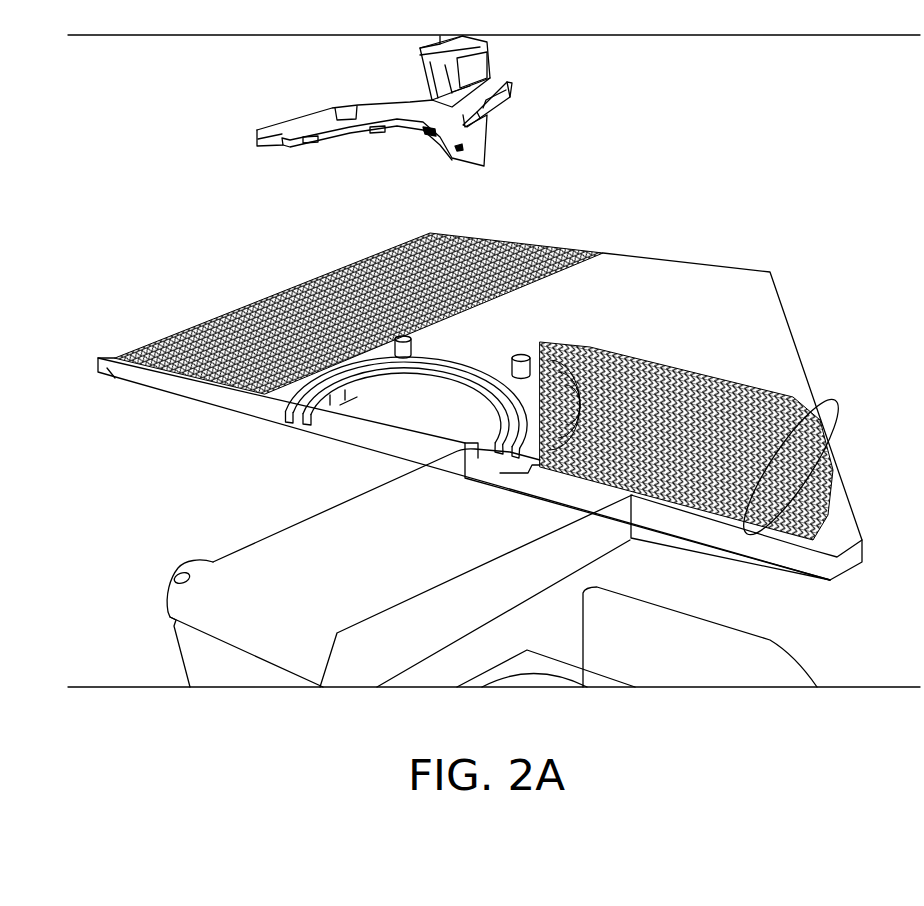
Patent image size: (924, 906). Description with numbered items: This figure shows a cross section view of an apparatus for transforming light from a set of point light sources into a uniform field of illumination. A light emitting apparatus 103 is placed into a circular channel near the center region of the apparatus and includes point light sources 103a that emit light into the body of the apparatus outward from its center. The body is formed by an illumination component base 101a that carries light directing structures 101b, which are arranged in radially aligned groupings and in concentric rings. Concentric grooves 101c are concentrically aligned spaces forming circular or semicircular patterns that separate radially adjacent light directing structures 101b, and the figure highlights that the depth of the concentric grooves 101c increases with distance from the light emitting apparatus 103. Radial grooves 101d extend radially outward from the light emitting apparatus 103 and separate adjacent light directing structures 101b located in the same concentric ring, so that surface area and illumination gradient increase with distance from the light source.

The light emitting apparatus 103 is at (477, 136).
The point light sources 103a is at (311, 143).
The illumination component base 101a is at (797, 563).
The light directing structures 101b is at (703, 520).
The concentric grooves 101c is at (838, 403).
The radial grooves 101d is at (183, 322).